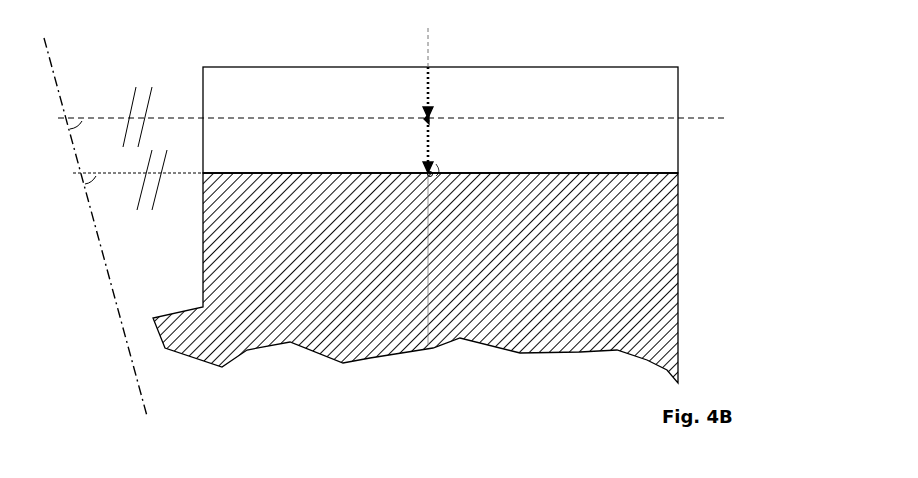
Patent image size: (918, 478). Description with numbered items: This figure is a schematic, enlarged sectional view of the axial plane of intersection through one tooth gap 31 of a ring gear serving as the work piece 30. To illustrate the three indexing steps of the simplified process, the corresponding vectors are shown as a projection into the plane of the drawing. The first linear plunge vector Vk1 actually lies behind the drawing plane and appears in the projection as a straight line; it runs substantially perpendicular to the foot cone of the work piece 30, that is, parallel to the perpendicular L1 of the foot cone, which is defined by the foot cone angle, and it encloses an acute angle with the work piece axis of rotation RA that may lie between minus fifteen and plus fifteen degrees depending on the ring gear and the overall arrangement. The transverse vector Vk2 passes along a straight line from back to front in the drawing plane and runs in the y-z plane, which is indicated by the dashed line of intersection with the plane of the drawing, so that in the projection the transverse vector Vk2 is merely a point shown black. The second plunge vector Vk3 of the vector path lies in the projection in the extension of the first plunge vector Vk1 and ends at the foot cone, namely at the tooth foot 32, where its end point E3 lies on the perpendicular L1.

The work piece 30 is at (660, 295).
The tooth gap 31 is at (679, 80).
The tooth foot 32 is at (655, 169).
The work piece axis of rotation RA is at (90, 216).
The perpendicular of the foot cone L1 is at (429, 175).
The y-z plane y-z is at (725, 118).
The first linear plunge vector Vk1 is at (447, 92).
The transverse vector Vk2 is at (420, 116).
The second plunge vector Vk3 is at (447, 146).
The end point E3 is at (425, 171).